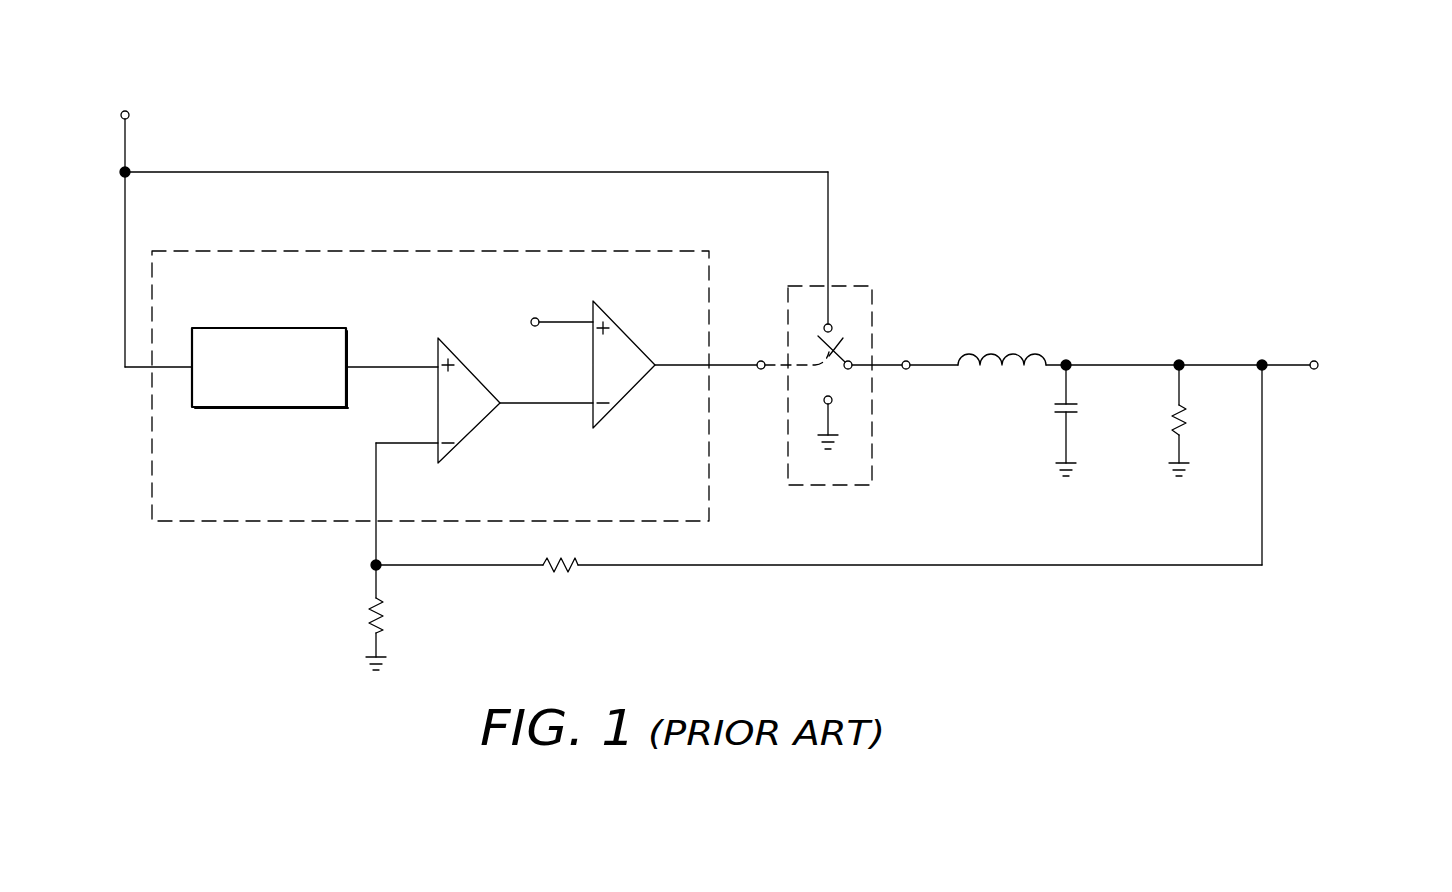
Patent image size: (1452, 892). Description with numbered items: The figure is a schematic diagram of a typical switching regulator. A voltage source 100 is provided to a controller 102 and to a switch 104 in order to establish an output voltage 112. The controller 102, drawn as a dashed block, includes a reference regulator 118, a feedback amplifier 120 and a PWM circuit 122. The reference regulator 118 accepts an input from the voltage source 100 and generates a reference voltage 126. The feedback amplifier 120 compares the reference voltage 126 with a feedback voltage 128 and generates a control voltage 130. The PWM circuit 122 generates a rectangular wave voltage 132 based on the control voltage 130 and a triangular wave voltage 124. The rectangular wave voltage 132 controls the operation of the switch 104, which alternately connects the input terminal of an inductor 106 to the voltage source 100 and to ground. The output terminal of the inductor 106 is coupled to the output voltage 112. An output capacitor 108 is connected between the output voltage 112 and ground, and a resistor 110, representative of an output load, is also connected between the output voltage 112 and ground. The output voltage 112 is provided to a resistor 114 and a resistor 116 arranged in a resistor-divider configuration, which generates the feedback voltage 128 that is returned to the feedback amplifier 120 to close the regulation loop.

The voltage source 100 is at (135, 78).
The controller 102 is at (188, 251).
The switch 104 is at (872, 296).
The inductor 106 is at (1018, 345).
The output capacitor 108 is at (1050, 407).
The resistor 110 is at (1208, 437).
The output voltage 112 is at (1414, 369).
The resistor 114 is at (590, 593).
The resistor 116 is at (452, 622).
The reference regulator 118 is at (232, 328).
The feedback amplifier 120 is at (470, 368).
The PWM circuit 122 is at (625, 335).
The triangular wave voltage 124 is at (515, 298).
The reference voltage 126 is at (382, 340).
The feedback voltage 128 is at (408, 412).
The control voltage 130 is at (536, 378).
The rectangular wave voltage 132 is at (740, 338).